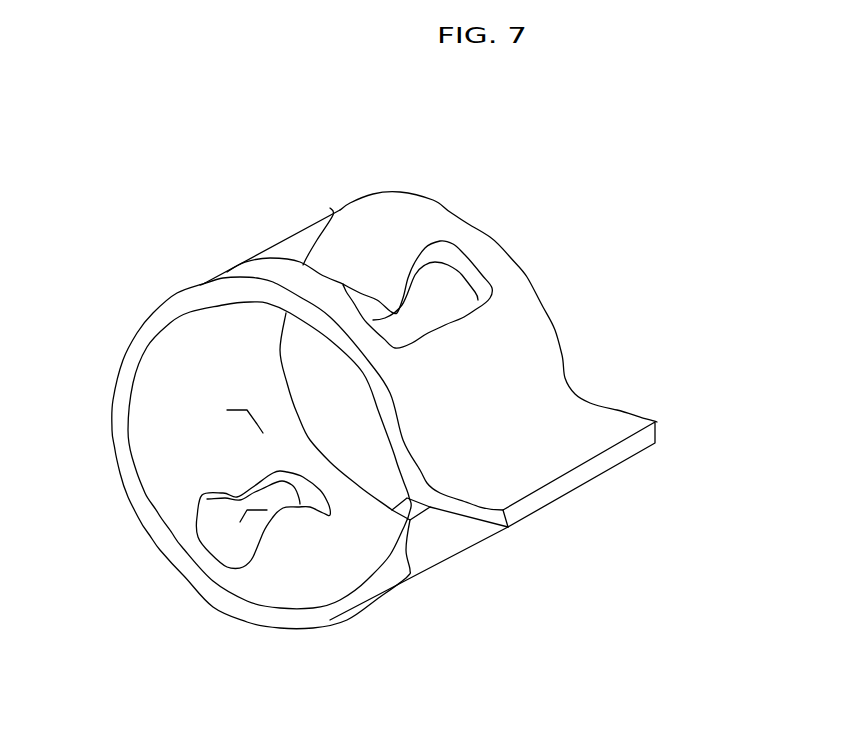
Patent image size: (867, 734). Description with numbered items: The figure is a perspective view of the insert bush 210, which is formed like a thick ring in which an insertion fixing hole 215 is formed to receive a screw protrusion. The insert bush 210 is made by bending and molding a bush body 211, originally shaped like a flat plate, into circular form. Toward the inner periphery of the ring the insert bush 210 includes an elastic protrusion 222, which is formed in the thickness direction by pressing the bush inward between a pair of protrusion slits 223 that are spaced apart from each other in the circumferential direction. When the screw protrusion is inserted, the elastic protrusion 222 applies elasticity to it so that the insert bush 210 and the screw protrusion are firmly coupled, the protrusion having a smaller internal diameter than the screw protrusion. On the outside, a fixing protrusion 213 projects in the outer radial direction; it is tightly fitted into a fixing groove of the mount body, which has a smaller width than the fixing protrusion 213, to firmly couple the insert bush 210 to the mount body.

The insert bush 210 is at (222, 193).
The bush body 211 is at (293, 615).
The fixing protrusion 213 is at (543, 453).
The insertion fixing hole 215 is at (227, 410).
The elastic protrusion 222 is at (287, 560).
The protrusion slits 223 is at (205, 499).